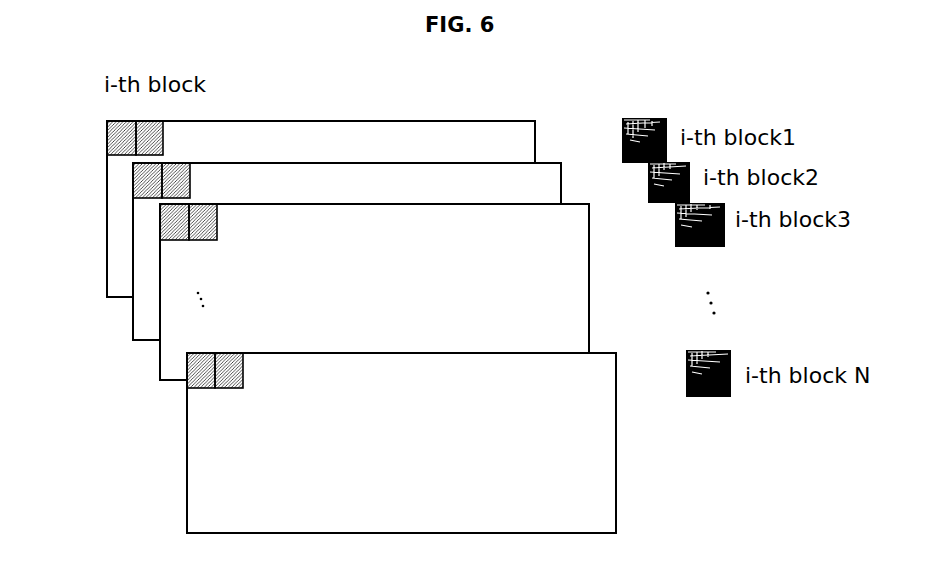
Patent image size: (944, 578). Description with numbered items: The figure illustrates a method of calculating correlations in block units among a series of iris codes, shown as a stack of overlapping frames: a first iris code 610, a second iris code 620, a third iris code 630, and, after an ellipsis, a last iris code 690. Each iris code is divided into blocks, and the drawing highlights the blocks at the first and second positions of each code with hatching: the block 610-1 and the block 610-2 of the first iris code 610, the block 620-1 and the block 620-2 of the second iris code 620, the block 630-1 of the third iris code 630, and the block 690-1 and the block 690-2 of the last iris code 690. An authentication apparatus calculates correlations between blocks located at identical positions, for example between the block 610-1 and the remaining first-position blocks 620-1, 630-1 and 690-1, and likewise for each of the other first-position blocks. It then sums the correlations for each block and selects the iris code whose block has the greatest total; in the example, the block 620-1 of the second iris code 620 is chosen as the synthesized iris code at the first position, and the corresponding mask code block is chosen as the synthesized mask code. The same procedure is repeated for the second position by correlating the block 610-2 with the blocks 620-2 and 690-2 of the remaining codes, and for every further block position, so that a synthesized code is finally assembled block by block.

The iris code 610 is at (530, 119).
The iris code 620 is at (555, 161).
The iris code 630 is at (582, 203).
The iris code 690 is at (609, 352).
The block 610-1 is at (143, 143).
The block 610-2 is at (163, 138).
The block 620-1 is at (143, 183).
The block 620-2 is at (191, 178).
The block 630-1 is at (160, 224).
The block 690-1 is at (190, 371).
The block 690-2 is at (243, 371).